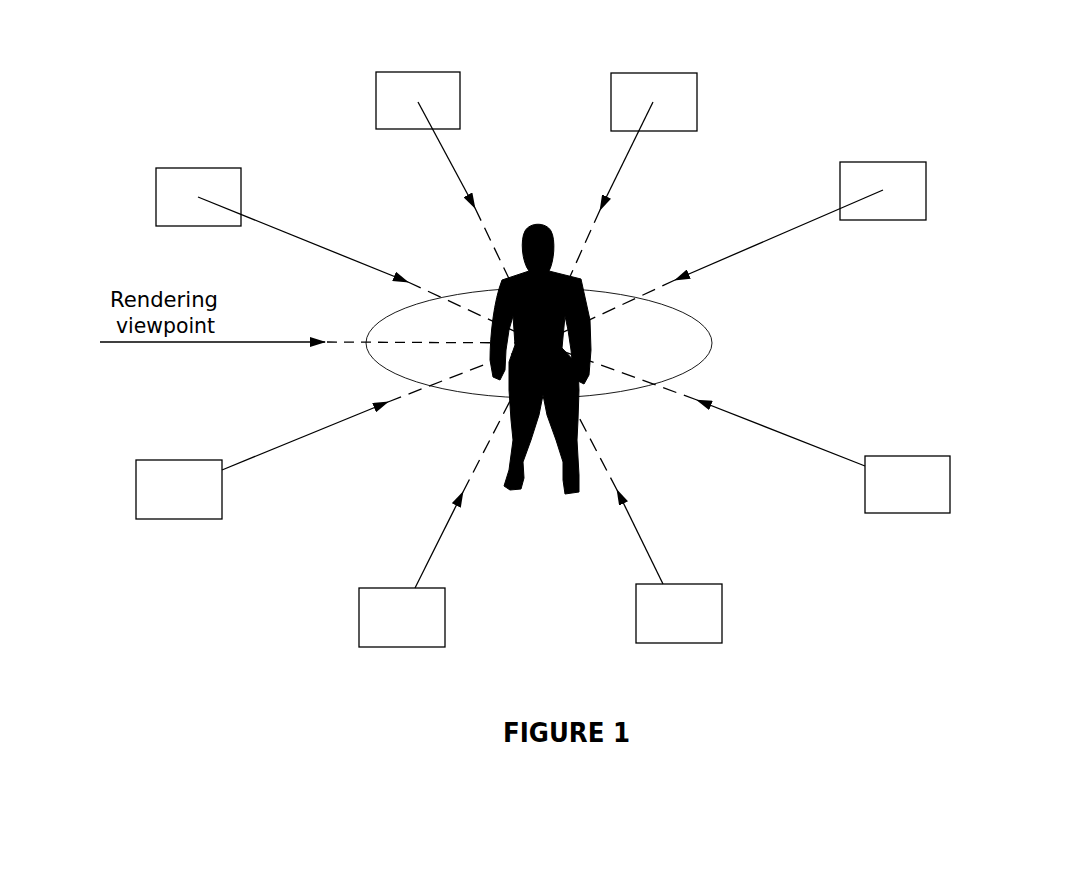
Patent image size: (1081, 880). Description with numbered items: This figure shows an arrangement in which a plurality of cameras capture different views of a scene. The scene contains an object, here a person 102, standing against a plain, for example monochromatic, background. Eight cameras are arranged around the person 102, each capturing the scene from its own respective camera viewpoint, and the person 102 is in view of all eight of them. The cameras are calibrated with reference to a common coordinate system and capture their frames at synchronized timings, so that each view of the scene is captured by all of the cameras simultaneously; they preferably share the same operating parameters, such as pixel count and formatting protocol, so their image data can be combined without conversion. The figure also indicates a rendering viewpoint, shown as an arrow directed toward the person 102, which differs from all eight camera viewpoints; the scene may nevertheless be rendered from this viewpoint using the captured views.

The person 102 is at (535, 227).